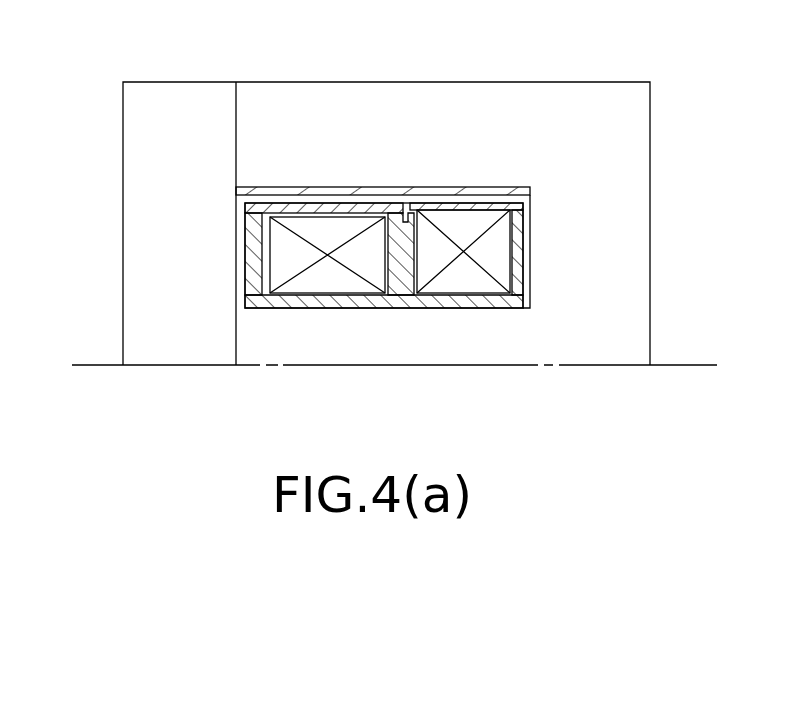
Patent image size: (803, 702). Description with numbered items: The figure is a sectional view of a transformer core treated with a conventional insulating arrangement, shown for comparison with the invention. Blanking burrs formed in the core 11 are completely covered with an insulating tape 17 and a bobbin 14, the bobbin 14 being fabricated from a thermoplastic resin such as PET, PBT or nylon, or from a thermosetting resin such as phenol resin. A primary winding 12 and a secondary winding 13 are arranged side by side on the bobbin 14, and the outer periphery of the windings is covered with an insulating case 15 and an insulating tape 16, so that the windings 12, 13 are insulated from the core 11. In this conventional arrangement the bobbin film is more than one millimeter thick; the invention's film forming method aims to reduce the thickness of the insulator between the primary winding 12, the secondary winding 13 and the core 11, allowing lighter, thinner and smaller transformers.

The core 11 is at (137, 188).
The primary winding 12 is at (325, 290).
The secondary winding 13 is at (470, 283).
The bobbin 14 is at (396, 290).
The insulating case 15 is at (309, 211).
The insulating tape 16 is at (472, 206).
The insulating tape 17 is at (365, 192).